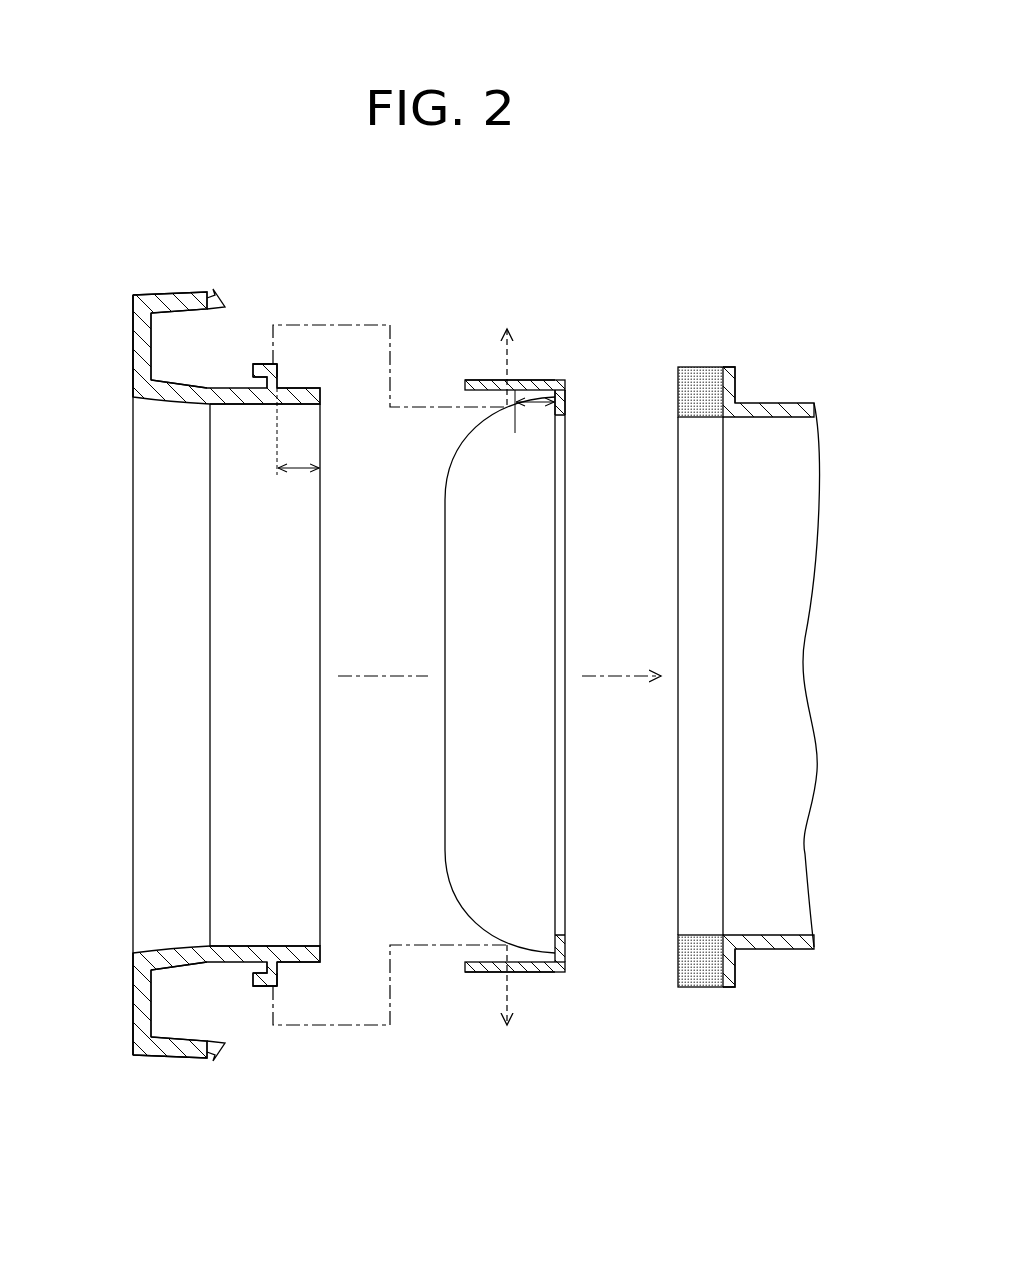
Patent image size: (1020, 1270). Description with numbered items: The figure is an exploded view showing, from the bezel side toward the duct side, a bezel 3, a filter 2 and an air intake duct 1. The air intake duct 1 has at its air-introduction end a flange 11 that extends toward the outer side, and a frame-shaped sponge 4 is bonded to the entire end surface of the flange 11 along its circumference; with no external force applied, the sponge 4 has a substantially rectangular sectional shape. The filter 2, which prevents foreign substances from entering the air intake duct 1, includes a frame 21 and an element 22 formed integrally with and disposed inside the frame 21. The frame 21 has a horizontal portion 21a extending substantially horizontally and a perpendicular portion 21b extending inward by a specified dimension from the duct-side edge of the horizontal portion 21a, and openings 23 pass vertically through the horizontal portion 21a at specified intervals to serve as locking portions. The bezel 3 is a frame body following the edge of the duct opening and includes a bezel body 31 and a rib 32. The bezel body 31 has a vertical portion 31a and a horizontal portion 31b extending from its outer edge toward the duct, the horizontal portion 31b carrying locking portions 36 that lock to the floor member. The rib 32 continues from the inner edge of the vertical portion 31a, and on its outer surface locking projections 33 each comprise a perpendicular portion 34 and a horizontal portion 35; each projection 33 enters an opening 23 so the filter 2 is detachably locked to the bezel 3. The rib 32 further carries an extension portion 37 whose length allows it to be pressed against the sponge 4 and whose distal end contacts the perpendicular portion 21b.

The air intake duct 1 is at (783, 400).
The flange 11 is at (733, 386).
The filter 2 is at (536, 662).
The frame 21 is at (482, 378).
The horizontal portion 21a is at (495, 378).
The perpendicular portion 21b is at (560, 395).
The element 22 is at (510, 532).
The openings 23 is at (510, 380).
The bezel 3 is at (169, 290).
The bezel body 31 is at (133, 367).
The vertical portion 31a is at (140, 327).
The horizontal portion 31b is at (197, 297).
The rib 32 is at (203, 384).
The locking projections 33 is at (280, 364).
The perpendicular portion 34 is at (280, 378).
The horizontal portion 35 is at (262, 362).
The locking portions 36 is at (222, 300).
The extension portion 37 is at (303, 405).
The sponge 4 is at (702, 364).